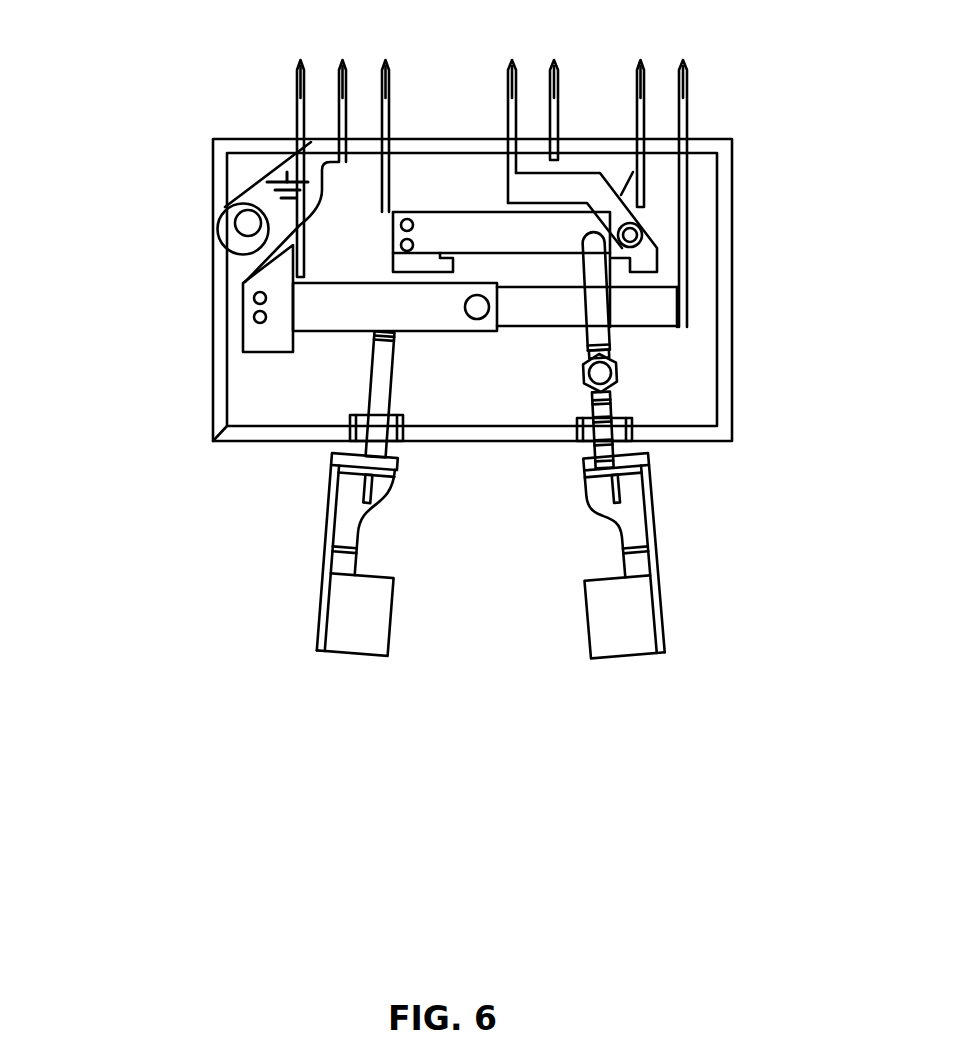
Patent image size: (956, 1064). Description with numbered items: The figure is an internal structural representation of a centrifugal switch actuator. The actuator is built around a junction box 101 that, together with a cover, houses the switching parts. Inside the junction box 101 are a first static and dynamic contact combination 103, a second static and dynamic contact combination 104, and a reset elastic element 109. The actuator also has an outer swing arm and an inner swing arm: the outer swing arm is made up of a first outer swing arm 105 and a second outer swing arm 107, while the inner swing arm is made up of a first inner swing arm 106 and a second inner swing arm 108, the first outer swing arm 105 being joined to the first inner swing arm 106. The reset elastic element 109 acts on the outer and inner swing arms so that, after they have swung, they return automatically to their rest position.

The junction box 101 is at (370, 314).
The first static and dynamic contact combination 103 is at (694, 186).
The second static and dynamic contact combination 104 is at (272, 247).
The first outer swing arm 105 is at (707, 573).
The first inner swing arm 106 is at (729, 321).
The second outer swing arm 107 is at (279, 590).
The second inner swing arm 108 is at (270, 459).
The reset elastic element 109 is at (717, 439).